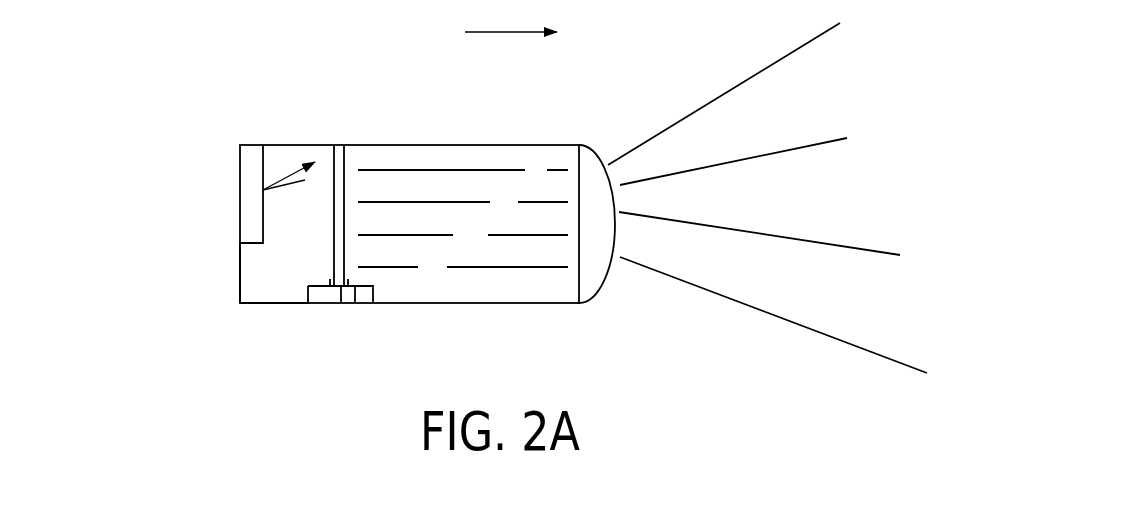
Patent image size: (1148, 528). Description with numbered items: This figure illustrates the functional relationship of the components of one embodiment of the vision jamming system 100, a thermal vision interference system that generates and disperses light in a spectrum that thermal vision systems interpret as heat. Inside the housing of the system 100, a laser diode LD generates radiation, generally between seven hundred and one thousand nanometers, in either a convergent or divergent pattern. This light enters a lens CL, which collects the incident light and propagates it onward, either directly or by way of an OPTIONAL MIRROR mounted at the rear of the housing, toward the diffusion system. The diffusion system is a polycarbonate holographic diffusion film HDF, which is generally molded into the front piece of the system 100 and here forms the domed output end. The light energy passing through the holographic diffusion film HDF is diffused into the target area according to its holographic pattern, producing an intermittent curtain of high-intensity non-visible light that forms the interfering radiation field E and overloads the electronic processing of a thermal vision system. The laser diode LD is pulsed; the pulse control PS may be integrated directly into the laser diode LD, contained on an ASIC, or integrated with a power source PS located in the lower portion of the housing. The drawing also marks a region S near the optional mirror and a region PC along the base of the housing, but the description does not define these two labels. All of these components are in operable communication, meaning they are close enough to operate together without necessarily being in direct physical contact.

The vision jamming system 100 is at (240, 145).
The optional mirror OPTIONAL MIRROR is at (238, 192).
The light source / sunlight input S is at (263, 213).
The power source PS is at (267, 263).
The printed circuit PC is at (297, 275).
The lens CL is at (352, 158).
The laser diode LD is at (347, 305).
The holographic diffusion film HDF is at (593, 223).
The interfering radiation field E is at (511, 56).